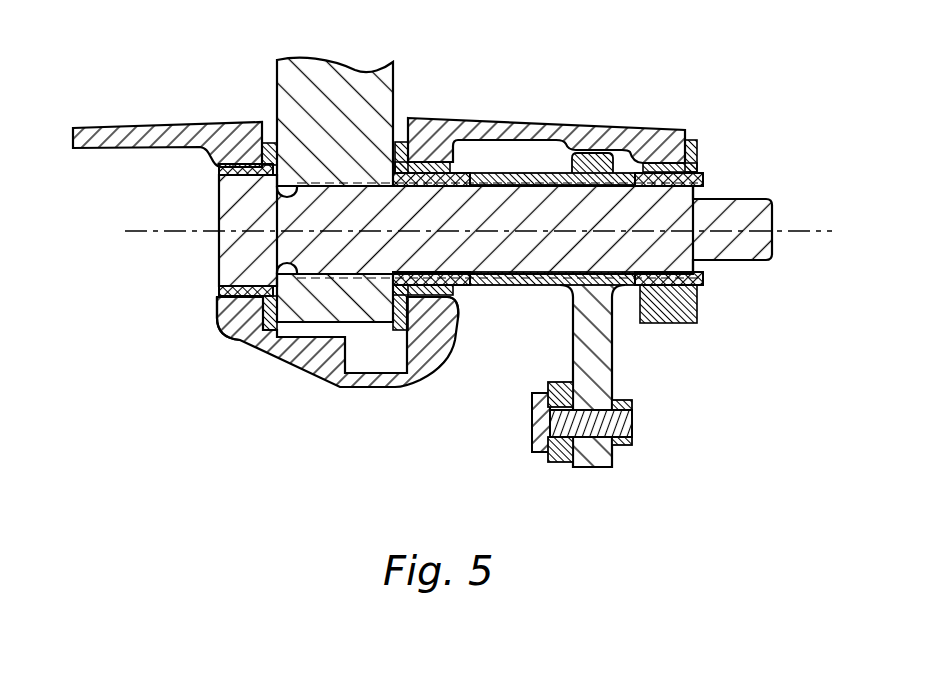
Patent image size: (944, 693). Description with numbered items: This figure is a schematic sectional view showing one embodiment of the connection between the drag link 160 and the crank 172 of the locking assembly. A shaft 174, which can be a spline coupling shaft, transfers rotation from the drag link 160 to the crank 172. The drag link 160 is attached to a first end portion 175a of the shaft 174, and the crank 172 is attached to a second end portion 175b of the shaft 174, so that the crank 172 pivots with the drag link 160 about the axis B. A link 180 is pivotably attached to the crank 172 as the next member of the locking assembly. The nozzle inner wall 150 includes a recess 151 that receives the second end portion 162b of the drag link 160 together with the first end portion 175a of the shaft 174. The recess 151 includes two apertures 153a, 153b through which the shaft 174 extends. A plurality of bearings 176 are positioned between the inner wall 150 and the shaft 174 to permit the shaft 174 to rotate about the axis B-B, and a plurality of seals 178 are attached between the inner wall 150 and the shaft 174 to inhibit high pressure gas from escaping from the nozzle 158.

The nozzle inner wall 150 is at (100, 130).
The recess 151 is at (328, 336).
The aperture 153a is at (217, 318).
The aperture 153b is at (447, 297).
The nozzle 158 is at (680, 70).
The drag link 160 is at (373, 97).
The second end portion of the drag link 162b is at (330, 150).
The crank 172 is at (613, 467).
The shaft 174 is at (750, 212).
The first end portion of the shaft 175a is at (332, 250).
The second end portion of the shaft 175b is at (667, 253).
The bearings 176 is at (432, 163).
The seals 178 is at (470, 172).
The link 180 is at (562, 457).